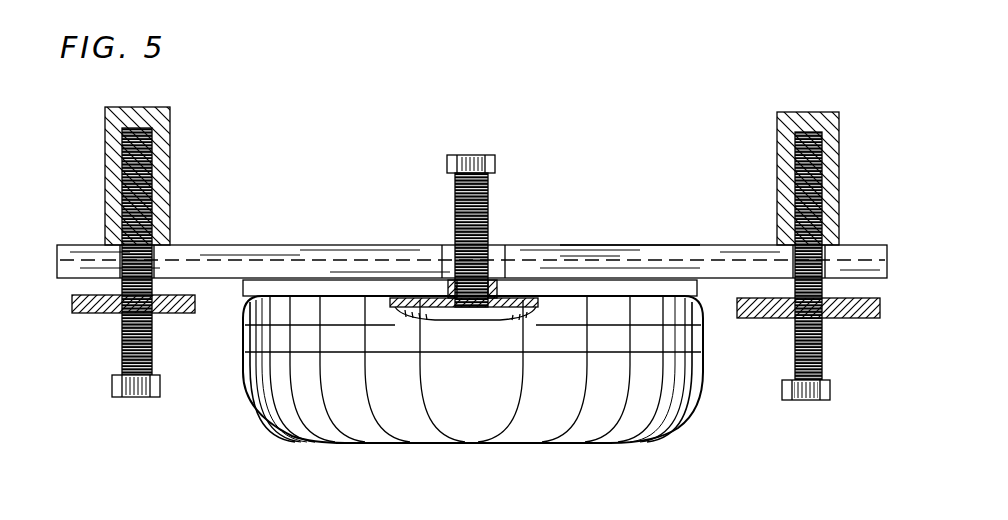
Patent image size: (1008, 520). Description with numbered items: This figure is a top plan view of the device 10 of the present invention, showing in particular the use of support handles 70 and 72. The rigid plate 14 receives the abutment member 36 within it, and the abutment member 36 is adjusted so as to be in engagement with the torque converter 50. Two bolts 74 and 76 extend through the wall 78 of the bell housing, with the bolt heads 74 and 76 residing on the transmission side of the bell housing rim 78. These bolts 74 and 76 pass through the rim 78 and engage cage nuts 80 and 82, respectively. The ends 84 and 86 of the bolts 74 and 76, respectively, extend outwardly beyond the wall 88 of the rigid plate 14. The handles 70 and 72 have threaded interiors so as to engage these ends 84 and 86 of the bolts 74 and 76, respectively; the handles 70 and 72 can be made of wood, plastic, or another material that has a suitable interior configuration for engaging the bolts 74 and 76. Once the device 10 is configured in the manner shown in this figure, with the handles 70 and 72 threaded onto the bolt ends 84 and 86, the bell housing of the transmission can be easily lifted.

The device 10 is at (666, 107).
The rigid plate 14 is at (345, 246).
The abutment member 36 is at (496, 160).
The torque converter 50 is at (625, 445).
The handle 70 is at (780, 113).
The handle 72 is at (172, 119).
The bolt 74 is at (822, 400).
The bolt 76 is at (112, 394).
The wall of the bell housing 78 is at (97, 313).
The cage nut 80 is at (843, 270).
The cage nut 82 is at (160, 270).
The end of bolt 84 is at (795, 136).
The end of bolt 86 is at (150, 178).
The wall of rigid plate 88 is at (605, 246).